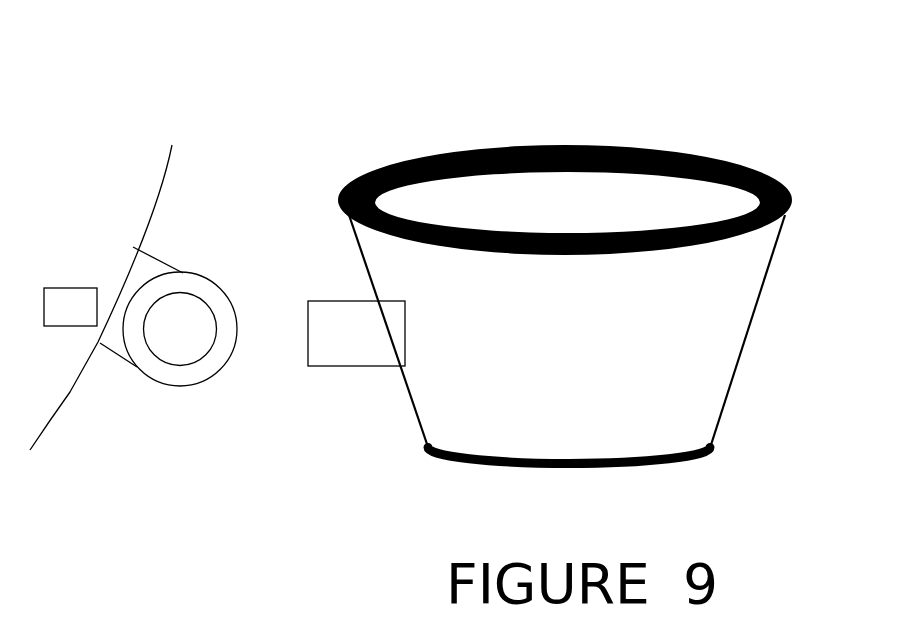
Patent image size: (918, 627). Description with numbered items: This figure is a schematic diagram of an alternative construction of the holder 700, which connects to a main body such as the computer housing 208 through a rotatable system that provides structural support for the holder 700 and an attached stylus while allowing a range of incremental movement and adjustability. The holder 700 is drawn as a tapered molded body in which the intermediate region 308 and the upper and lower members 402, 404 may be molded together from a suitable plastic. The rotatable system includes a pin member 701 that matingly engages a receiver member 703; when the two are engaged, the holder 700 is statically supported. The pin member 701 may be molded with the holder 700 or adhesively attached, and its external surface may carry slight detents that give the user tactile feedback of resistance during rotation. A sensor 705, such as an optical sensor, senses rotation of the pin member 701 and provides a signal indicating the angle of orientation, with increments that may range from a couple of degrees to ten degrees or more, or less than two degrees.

The holder 700 is at (588, 240).
The member 402 is at (795, 188).
The intermediate region 308 is at (717, 373).
The member 404 is at (427, 445).
The computer housing 208 is at (127, 247).
The receiver member 703 is at (193, 320).
The sensor 705 is at (73, 288).
The pin member 701 is at (302, 343).